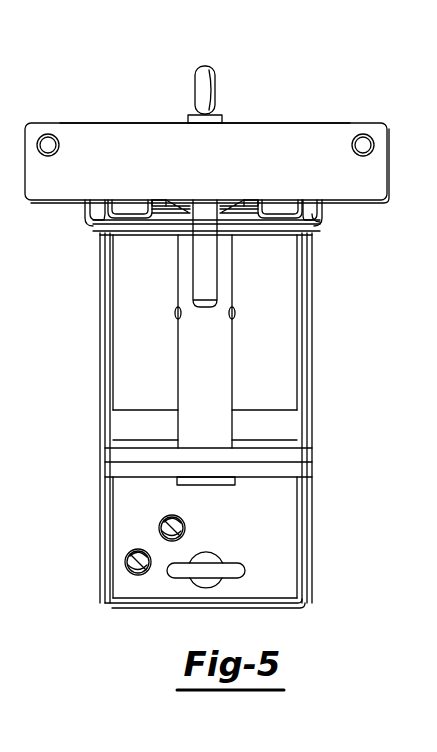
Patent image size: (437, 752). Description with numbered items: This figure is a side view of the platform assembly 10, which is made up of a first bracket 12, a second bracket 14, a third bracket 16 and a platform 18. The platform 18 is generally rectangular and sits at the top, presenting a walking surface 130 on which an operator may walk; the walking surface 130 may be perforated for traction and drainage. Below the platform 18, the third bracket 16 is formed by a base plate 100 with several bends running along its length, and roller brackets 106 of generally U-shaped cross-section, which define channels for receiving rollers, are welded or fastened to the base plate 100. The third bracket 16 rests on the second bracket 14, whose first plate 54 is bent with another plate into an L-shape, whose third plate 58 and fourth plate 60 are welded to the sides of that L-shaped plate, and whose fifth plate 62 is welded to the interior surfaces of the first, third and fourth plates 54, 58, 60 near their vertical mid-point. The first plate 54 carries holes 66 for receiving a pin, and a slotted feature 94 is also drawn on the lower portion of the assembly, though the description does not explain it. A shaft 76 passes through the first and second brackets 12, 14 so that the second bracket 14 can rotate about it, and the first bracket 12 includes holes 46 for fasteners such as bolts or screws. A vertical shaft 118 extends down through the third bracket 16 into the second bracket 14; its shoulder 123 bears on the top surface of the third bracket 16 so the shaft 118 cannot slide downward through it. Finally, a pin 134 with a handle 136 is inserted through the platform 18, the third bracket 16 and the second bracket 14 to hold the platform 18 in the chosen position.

The platform assembly 10 is at (84, 62).
The first bracket 12 is at (78, 312).
The second bracket 14 is at (348, 488).
The third bracket 16 is at (350, 244).
The platform 18 is at (340, 118).
The holes 46 is at (168, 522).
The first plate 54 is at (140, 388).
The third plate 58 is at (100, 357).
The fourth plate 60 is at (311, 370).
The fifth plate 62 is at (272, 437).
The holes 66 is at (167, 528).
The shaft 76 is at (237, 313).
The slot 94 is at (206, 568).
The base plate 100 is at (92, 216).
The roller brackets 106 is at (121, 208).
The shaft 118 is at (192, 358).
The shoulder 123 is at (173, 208).
The walking surface 130 is at (263, 122).
The pin 134 is at (210, 267).
The handle 136 is at (200, 66).